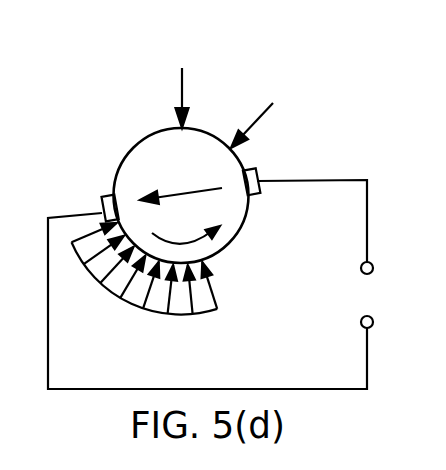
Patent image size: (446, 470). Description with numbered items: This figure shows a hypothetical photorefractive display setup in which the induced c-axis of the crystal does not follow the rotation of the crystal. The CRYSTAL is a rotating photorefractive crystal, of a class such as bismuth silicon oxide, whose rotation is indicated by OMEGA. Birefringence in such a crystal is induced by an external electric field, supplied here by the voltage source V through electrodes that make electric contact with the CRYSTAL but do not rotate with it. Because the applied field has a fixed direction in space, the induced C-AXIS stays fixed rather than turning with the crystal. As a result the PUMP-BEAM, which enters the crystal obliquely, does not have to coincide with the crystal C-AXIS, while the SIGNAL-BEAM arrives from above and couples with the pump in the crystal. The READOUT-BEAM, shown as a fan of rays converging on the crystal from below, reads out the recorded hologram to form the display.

The crystal CRYSTAL is at (235, 195).
The induced c-axis C-AXIS is at (181, 183).
The rotation of the crystal OMEGA is at (186, 226).
The signal beam SIGNAL-BEAM is at (182, 70).
The pump beam PUMP-BEAM is at (284, 114).
The readout beam READOUT-BEAM is at (145, 298).
The external electric field source with electrodes V is at (213, 278).